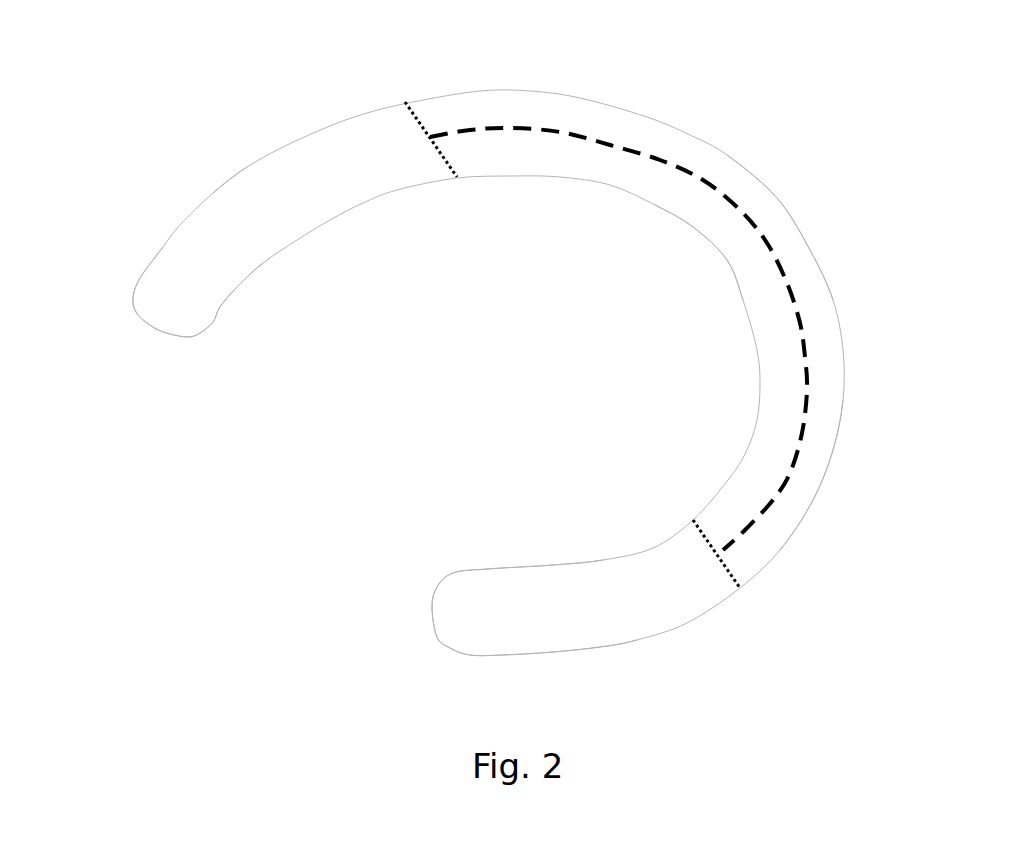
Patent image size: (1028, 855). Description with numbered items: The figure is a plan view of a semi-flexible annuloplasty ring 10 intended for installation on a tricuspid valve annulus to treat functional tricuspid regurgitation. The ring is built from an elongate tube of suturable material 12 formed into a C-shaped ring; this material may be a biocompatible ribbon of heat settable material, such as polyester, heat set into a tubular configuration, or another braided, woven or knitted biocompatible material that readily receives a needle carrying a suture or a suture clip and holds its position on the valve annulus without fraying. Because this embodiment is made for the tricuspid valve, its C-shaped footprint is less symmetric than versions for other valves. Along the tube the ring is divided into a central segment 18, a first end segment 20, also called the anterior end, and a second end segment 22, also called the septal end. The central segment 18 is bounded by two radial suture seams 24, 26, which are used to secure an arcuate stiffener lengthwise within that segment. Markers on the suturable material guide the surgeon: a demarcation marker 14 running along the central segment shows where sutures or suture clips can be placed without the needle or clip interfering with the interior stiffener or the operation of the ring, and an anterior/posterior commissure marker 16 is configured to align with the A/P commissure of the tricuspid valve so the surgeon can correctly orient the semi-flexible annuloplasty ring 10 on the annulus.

The semi-flexible annuloplasty ring 10 is at (753, 148).
The elongate tube of suturable material 12 is at (803, 475).
The demarcation marker 14 is at (808, 367).
The anterior/posterior commissure marker 16 is at (717, 253).
The central segment 18 is at (798, 258).
The first end segment 20 is at (200, 255).
The second end segment 22 is at (602, 647).
The radial suture seam 24 is at (406, 104).
The radial suture seam 26 is at (735, 573).